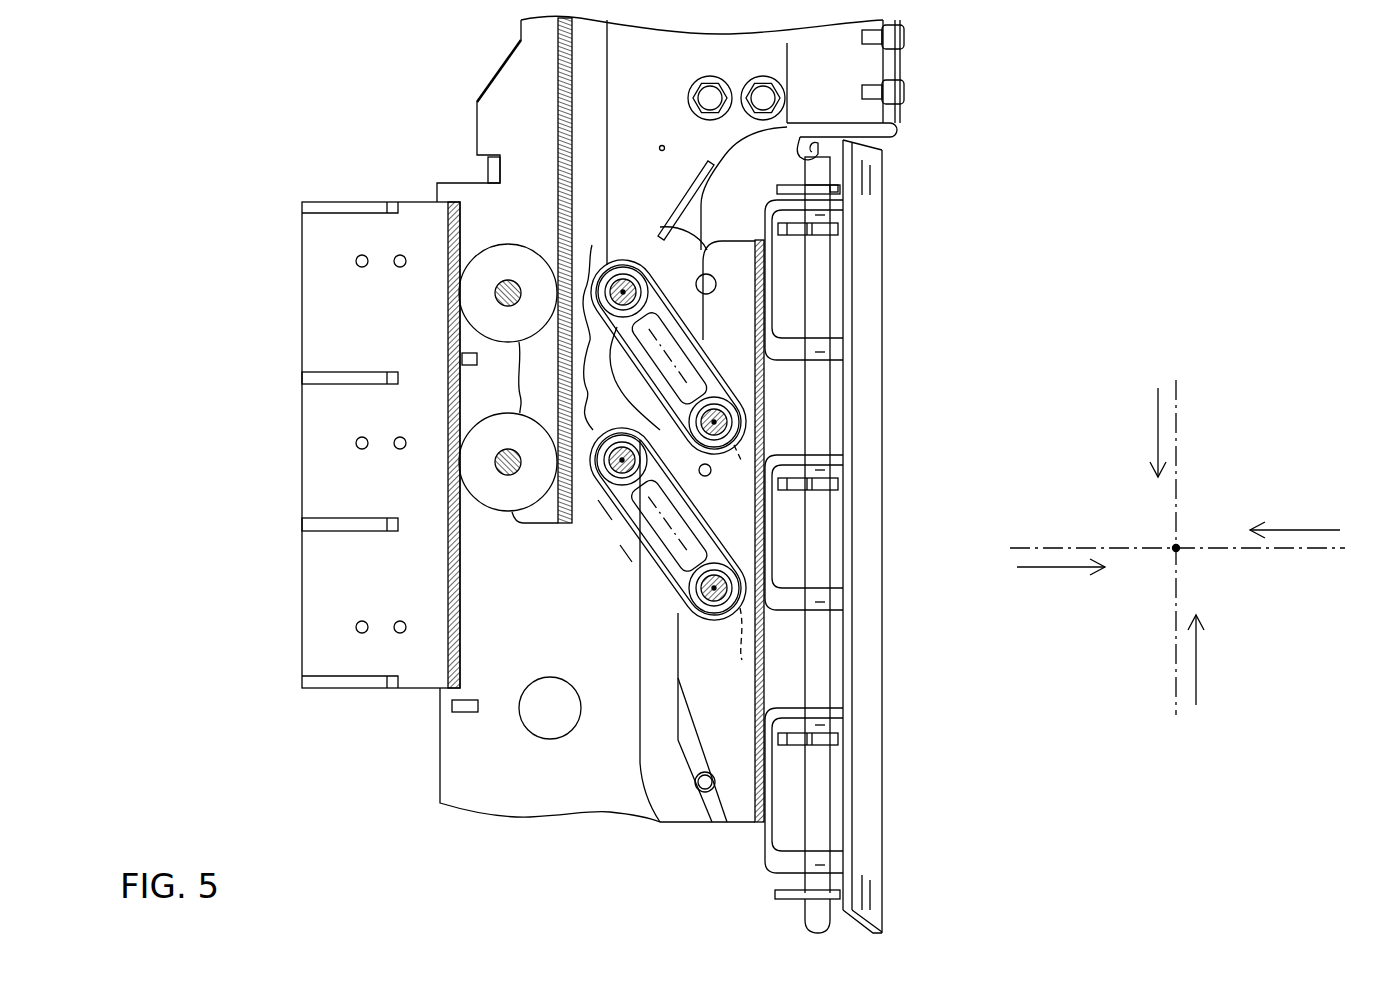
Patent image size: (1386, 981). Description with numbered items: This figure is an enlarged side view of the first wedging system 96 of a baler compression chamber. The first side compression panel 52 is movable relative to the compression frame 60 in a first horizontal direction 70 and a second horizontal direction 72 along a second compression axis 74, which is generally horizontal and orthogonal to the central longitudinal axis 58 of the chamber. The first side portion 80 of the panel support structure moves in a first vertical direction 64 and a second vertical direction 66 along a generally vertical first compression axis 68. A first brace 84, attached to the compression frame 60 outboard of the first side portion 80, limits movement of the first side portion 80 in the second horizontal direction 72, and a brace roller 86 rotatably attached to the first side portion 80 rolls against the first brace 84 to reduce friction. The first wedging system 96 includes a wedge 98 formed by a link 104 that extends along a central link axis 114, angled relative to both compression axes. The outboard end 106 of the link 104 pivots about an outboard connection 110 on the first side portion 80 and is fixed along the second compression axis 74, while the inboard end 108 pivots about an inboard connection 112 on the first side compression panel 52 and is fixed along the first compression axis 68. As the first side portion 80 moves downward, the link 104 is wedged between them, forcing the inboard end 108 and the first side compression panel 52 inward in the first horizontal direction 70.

The first side compression panel 52 is at (885, 487).
The central longitudinal axis 58 is at (1180, 552).
The compression frame 60 is at (505, 762).
The first vertical direction 64 is at (1158, 428).
The second vertical direction 66 is at (1196, 680).
The first compression axis 68 is at (1180, 440).
The first horizontal direction 70 is at (1045, 568).
The second horizontal direction 72 is at (1302, 530).
The second compression axis 74 is at (1030, 545).
The first side portion 80 is at (537, 116).
The first brace 84 is at (375, 308).
The brace roller 86 is at (508, 268).
The first wedging system 96 is at (625, 557).
The wedge 98 is at (618, 530).
The link 104 is at (690, 358).
The outboard end 106 is at (645, 328).
The inboard end 108 is at (738, 436).
The outboard connection 110 is at (642, 258).
The inboard connection 112 is at (716, 422).
The central link axis 114 is at (738, 468).